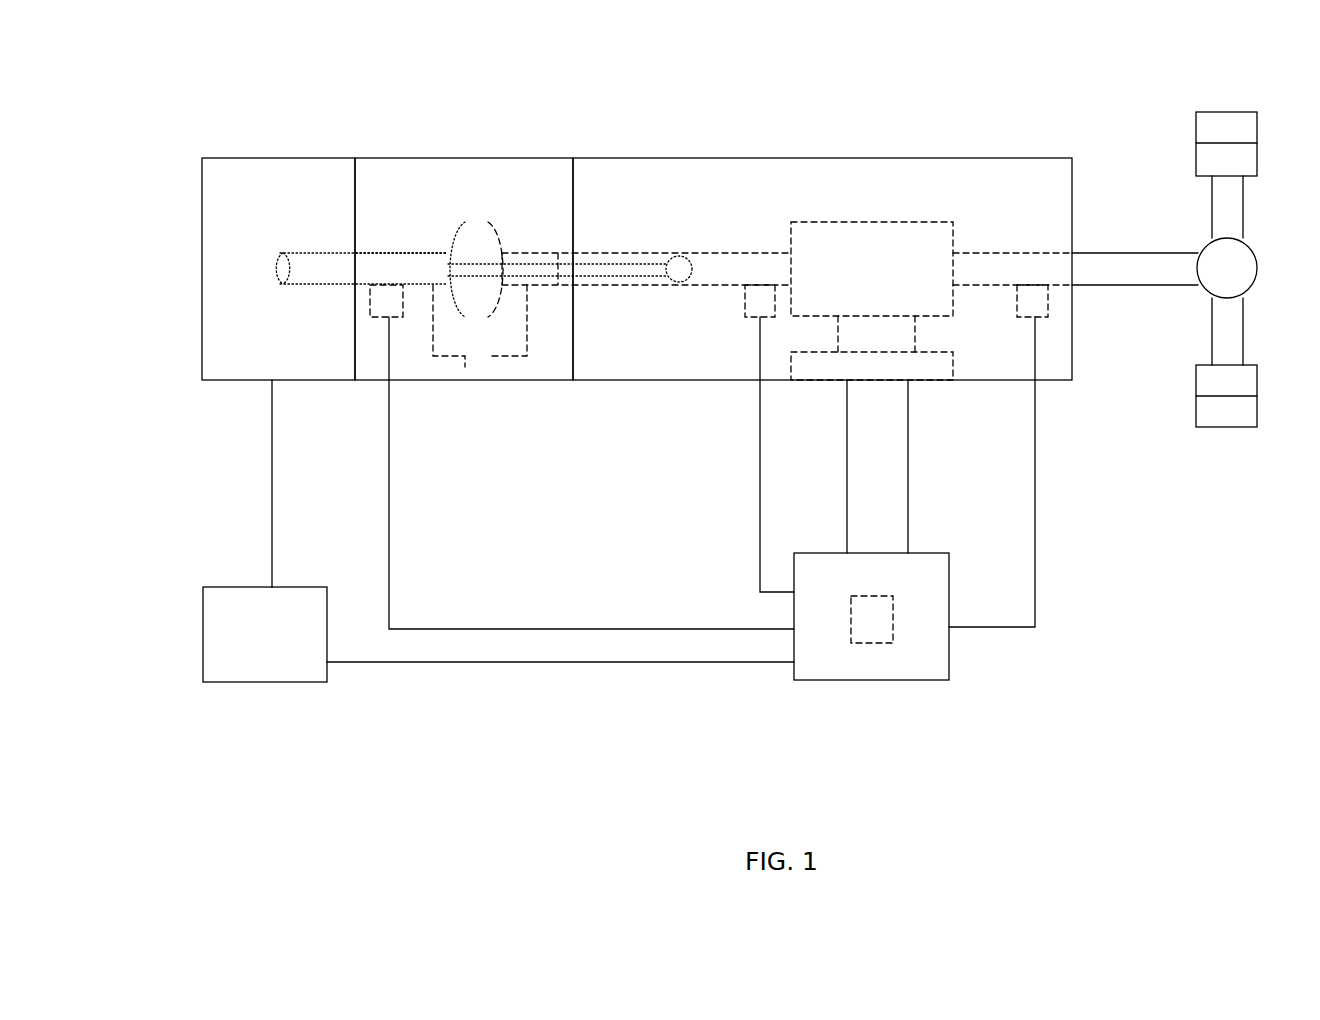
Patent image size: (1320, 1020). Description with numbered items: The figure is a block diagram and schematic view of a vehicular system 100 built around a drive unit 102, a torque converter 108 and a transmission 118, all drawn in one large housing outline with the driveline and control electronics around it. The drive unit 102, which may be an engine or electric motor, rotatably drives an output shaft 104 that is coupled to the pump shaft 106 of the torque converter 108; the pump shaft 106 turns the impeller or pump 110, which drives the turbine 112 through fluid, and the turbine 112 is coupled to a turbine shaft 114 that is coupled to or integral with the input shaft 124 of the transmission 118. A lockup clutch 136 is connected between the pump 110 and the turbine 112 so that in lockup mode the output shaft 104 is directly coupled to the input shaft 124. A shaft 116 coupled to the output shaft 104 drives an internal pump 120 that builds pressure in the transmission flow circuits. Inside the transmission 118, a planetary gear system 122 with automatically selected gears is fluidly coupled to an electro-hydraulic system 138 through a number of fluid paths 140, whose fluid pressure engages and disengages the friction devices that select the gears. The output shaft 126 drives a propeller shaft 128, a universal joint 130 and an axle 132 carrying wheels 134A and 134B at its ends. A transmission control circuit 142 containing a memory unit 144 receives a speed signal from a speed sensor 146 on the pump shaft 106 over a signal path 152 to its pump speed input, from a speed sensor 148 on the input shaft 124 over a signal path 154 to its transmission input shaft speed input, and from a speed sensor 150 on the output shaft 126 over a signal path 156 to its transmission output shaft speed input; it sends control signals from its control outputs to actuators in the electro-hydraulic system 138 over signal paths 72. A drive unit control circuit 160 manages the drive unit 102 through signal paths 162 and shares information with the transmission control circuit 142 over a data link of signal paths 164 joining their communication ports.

The vehicular system 100 is at (268, 110).
The drive unit 102 is at (325, 158).
The output shaft 104 is at (300, 286).
The pump shaft 106 is at (415, 253).
The torque converter 108 is at (440, 158).
The pump 110 is at (457, 230).
The turbine 112 is at (503, 230).
The turbine shaft 114 is at (522, 253).
The shaft 116 is at (603, 270).
The transmission 118 is at (745, 158).
The internal pump 120 is at (675, 256).
The planetary gear system 122 is at (872, 269).
The input shaft 124 is at (765, 253).
The output shaft 126 is at (993, 253).
The propeller shaft 128 is at (1130, 253).
The universal joint 130 is at (1254, 288).
The axle 132 is at (1243, 208).
The wheel 134A is at (1212, 112).
The wheel 134B is at (1215, 427).
The lockup clutch 136 is at (488, 361).
The electro-hydraulic system 138 is at (808, 380).
The fluid paths 140 is at (932, 332).
The transmission control circuit 142 is at (880, 680).
The memory unit 144 is at (880, 644).
The speed sensor 146 is at (370, 303).
The speed sensor 148 is at (745, 302).
The speed sensor 150 is at (1048, 308).
The signal path 152 is at (556, 629).
The signal path 154 is at (760, 445).
The signal path 156 is at (1035, 490).
The drive unit control circuit 160 is at (287, 682).
The signal paths 162 is at (272, 497).
The signal paths 164 is at (552, 662).
The signal paths 72 is at (933, 485).